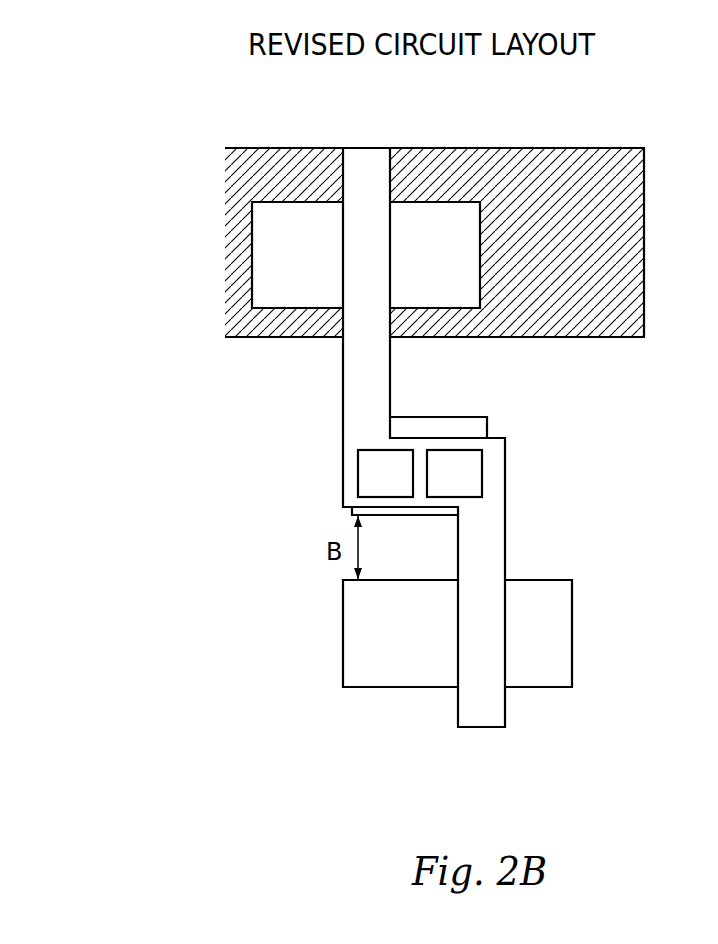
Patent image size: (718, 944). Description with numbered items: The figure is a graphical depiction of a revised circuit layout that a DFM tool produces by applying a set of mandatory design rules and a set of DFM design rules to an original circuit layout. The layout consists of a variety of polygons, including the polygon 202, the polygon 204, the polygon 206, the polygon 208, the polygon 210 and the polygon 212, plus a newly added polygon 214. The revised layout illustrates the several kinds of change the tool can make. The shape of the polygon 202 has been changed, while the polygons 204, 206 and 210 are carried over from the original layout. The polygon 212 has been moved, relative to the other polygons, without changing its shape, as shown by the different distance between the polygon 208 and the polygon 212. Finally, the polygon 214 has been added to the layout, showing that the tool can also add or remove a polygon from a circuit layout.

The polygon 202 is at (366, 148).
The polygon 204 is at (645, 170).
The polygon 206 is at (262, 254).
The polygon 208 is at (488, 415).
The polygon 210 is at (375, 474).
The polygon 212 is at (574, 630).
The polygon 214 is at (465, 472).